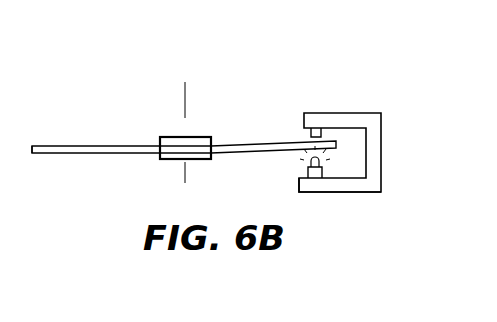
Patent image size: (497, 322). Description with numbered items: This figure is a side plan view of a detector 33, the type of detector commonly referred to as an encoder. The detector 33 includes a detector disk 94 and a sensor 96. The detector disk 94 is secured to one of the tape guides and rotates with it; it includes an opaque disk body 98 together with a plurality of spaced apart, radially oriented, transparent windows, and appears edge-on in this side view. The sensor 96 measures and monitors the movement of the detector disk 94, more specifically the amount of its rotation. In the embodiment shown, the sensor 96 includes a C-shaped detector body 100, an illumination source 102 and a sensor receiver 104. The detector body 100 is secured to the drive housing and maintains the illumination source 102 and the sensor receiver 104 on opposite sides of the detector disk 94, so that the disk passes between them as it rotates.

The detector 33 is at (390, 32).
The detector disk 94 is at (119, 141).
The sensor 96 is at (340, 113).
The opaque disk body 98 is at (47, 144).
The detector body 100 is at (335, 184).
The illumination source 102 is at (306, 172).
The sensor receiver 104 is at (309, 133).